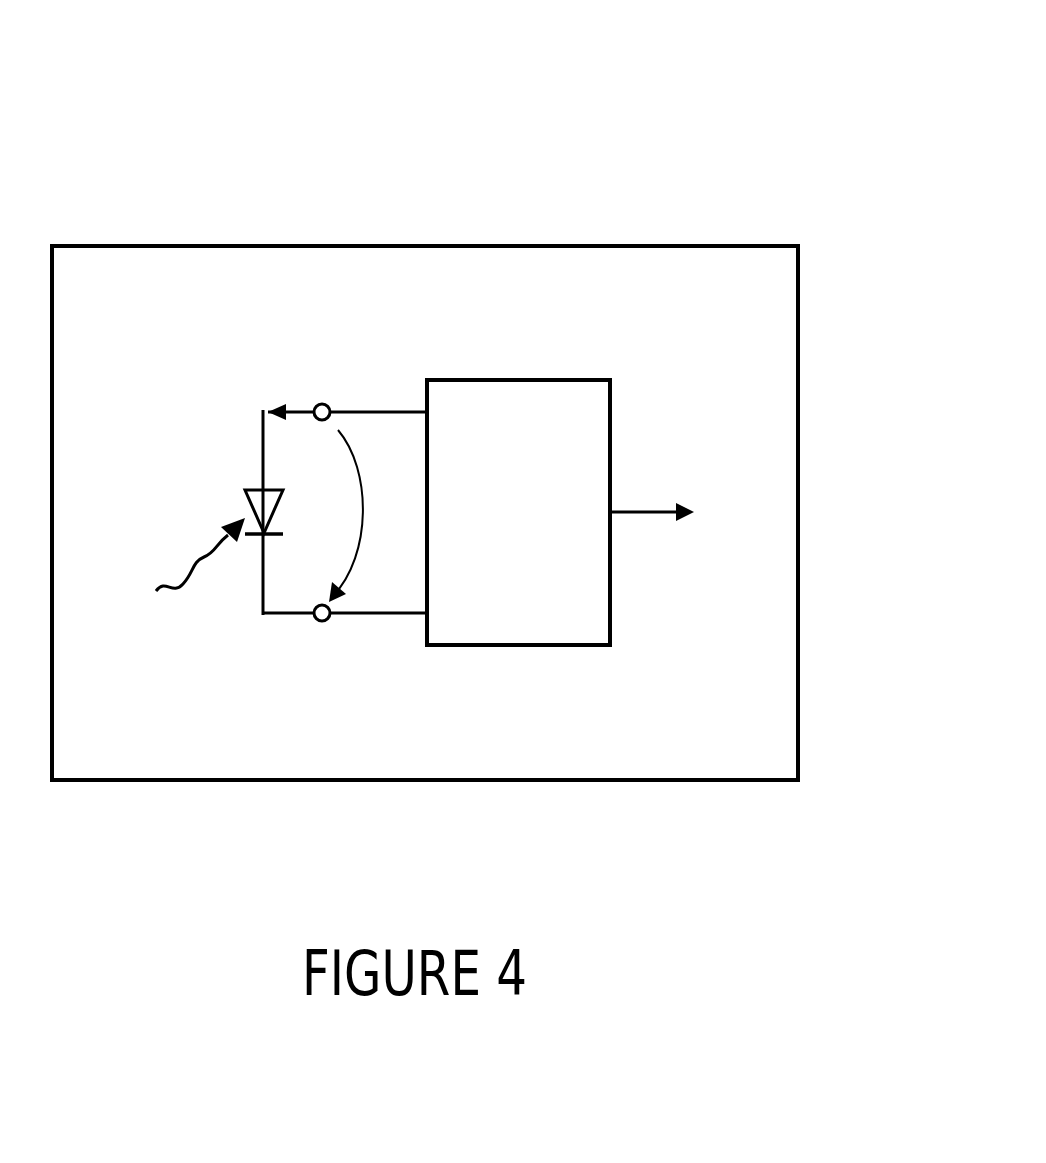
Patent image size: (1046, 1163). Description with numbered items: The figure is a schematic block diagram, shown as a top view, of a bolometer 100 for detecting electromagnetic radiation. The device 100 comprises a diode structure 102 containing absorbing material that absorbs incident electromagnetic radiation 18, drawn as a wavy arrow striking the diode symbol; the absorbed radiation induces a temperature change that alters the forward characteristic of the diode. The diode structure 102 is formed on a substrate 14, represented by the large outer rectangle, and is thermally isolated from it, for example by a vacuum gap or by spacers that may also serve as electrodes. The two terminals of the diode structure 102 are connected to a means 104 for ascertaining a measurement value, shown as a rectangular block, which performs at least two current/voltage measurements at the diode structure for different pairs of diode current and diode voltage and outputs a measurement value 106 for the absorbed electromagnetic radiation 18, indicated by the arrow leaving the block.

The bolometer 100 is at (621, 112).
The substrate 14 is at (215, 781).
The diode structure 102 is at (258, 490).
The electromagnetic radiation 18 is at (180, 565).
The means for ascertaining a measurement value 104 is at (520, 648).
The measurement value 106 is at (640, 514).